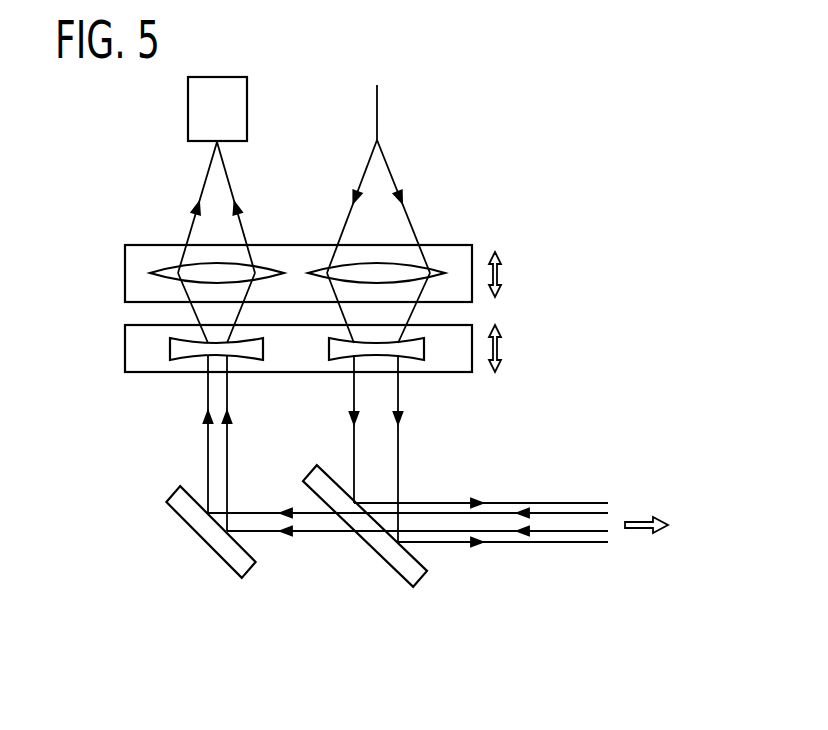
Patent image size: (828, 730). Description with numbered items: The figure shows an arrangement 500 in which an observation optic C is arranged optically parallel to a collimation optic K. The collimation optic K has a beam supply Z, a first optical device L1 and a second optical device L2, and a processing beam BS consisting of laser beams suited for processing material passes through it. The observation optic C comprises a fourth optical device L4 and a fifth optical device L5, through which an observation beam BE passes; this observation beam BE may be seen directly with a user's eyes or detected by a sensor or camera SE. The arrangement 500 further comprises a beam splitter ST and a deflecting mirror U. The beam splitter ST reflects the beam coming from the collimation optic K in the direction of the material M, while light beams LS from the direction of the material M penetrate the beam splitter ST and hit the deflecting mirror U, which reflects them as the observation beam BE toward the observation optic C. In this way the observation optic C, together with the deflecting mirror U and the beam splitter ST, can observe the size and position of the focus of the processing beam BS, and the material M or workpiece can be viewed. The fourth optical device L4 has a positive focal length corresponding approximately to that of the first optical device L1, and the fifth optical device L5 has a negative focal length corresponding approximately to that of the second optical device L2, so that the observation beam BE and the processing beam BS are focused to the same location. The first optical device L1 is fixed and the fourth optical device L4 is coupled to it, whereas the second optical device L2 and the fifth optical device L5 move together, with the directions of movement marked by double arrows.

The arrangement 500 is at (117, 537).
The sensor or camera SE is at (187, 97).
The beam supply Z is at (377, 140).
The fourth optical device L4 is at (166, 270).
The first optical device L1 is at (438, 271).
The fifth optical device L5 is at (169, 353).
The second optical device L2 is at (425, 354).
The observation beam BE is at (207, 444).
The processing beam BS is at (354, 444).
The deflecting mirror U is at (199, 536).
The beam splitter ST is at (375, 553).
The light beams LS is at (581, 545).
The material M is at (661, 525).
The collimation optic K is at (520, 137).
The observation optic C is at (84, 135).